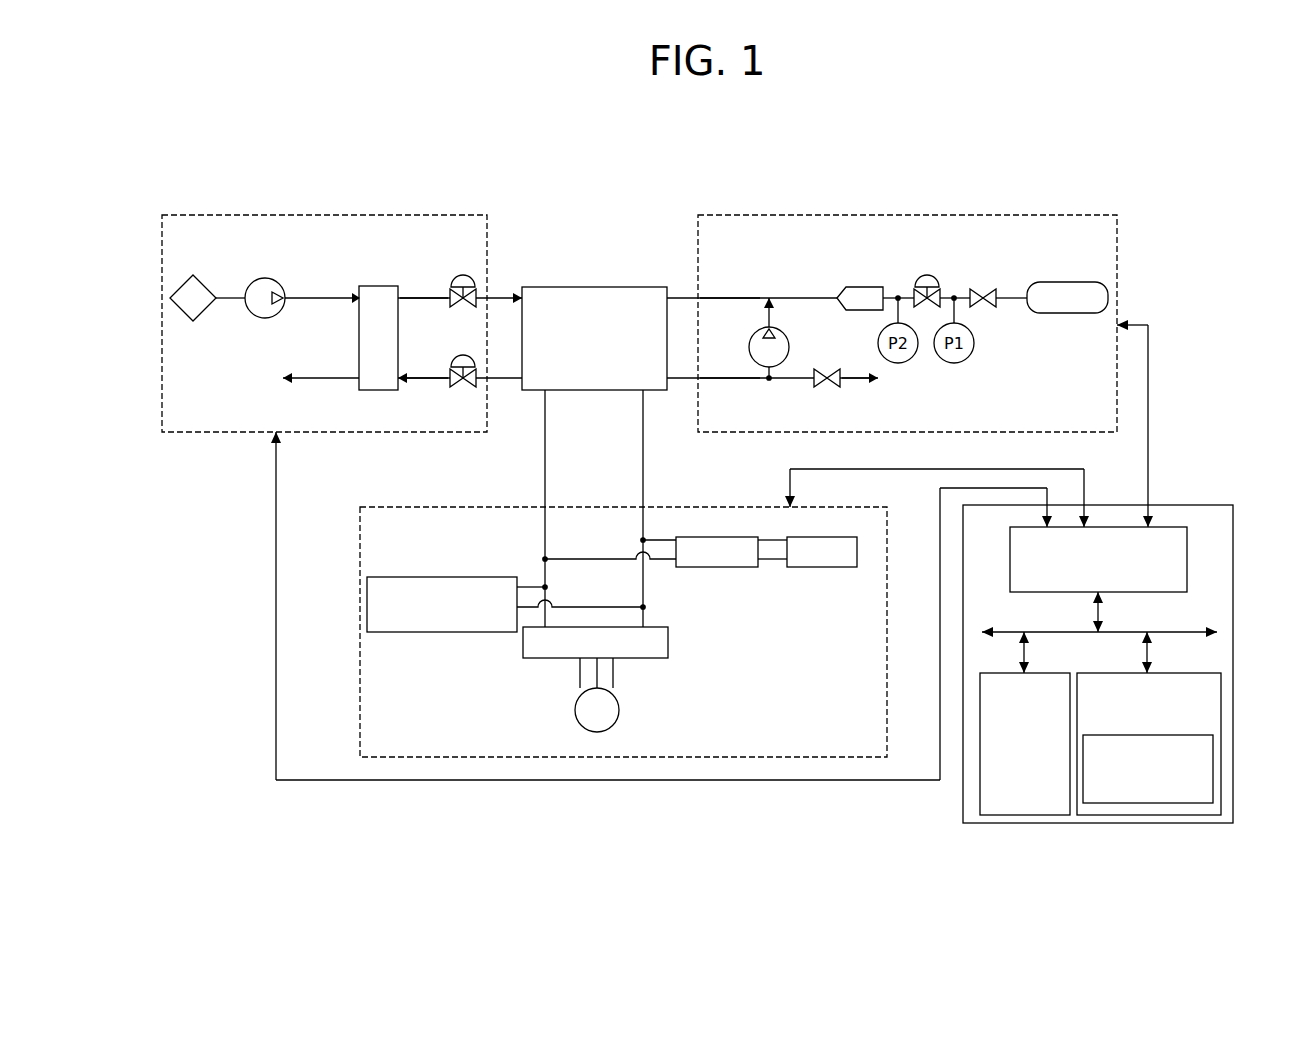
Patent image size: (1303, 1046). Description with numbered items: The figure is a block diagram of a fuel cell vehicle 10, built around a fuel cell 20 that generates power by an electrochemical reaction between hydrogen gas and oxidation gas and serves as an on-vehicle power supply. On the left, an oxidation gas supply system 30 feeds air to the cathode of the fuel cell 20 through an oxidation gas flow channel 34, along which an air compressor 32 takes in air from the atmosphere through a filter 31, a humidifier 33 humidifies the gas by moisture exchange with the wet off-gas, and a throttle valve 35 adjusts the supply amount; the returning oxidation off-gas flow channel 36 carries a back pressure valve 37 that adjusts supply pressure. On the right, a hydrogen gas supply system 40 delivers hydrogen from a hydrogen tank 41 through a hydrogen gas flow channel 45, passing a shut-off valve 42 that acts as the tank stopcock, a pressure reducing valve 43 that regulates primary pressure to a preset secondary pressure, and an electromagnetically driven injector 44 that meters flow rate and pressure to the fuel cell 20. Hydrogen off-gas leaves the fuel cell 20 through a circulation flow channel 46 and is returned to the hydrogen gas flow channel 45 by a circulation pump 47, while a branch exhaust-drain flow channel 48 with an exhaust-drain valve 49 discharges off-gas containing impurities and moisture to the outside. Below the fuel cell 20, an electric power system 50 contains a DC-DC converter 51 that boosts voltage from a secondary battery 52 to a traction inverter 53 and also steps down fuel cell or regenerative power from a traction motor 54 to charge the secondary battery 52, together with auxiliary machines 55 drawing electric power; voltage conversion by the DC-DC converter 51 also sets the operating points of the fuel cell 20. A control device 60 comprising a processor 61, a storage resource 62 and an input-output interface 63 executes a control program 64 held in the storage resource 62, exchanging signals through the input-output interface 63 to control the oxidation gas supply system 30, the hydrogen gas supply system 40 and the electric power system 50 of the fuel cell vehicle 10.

The fuel cell vehicle 10 is at (1026, 145).
The fuel cell 20 is at (625, 287).
The oxidation gas supply system 30 is at (322, 215).
The filter 31 is at (208, 280).
The air compressor 32 is at (270, 278).
The humidifier 33 is at (372, 286).
The oxidation gas flow channel 34 is at (418, 296).
The throttle valve 35 is at (463, 274).
The oxidation off-gas flow channel 36 is at (432, 375).
The back pressure valve 37 is at (460, 356).
The hydrogen gas supply system 40 is at (920, 215).
The hydrogen tank 41 is at (1058, 282).
The shut-off valve 42 is at (988, 289).
The pressure reducing valve 43 is at (935, 273).
The injector 44 is at (862, 287).
The hydrogen gas flow channel 45 is at (718, 298).
The circulation flow channel 46 is at (712, 378).
The circulation pump 47 is at (790, 345).
The exhaust-drain flow channel 48 is at (842, 370).
The exhaust-drain valve 49 is at (820, 382).
The electric power system 50 is at (452, 507).
The DC-DC converter 51 is at (720, 567).
The secondary battery 52 is at (820, 567).
The traction inverter 53 is at (668, 640).
The traction motor 54 is at (619, 710).
The auxiliary machines 55 is at (480, 577).
The control device 60 is at (1195, 505).
The processor 61 is at (1030, 823).
The storage resource 62 is at (1180, 673).
The input-output interface 63 is at (1187, 545).
The control program 64 is at (1150, 823).